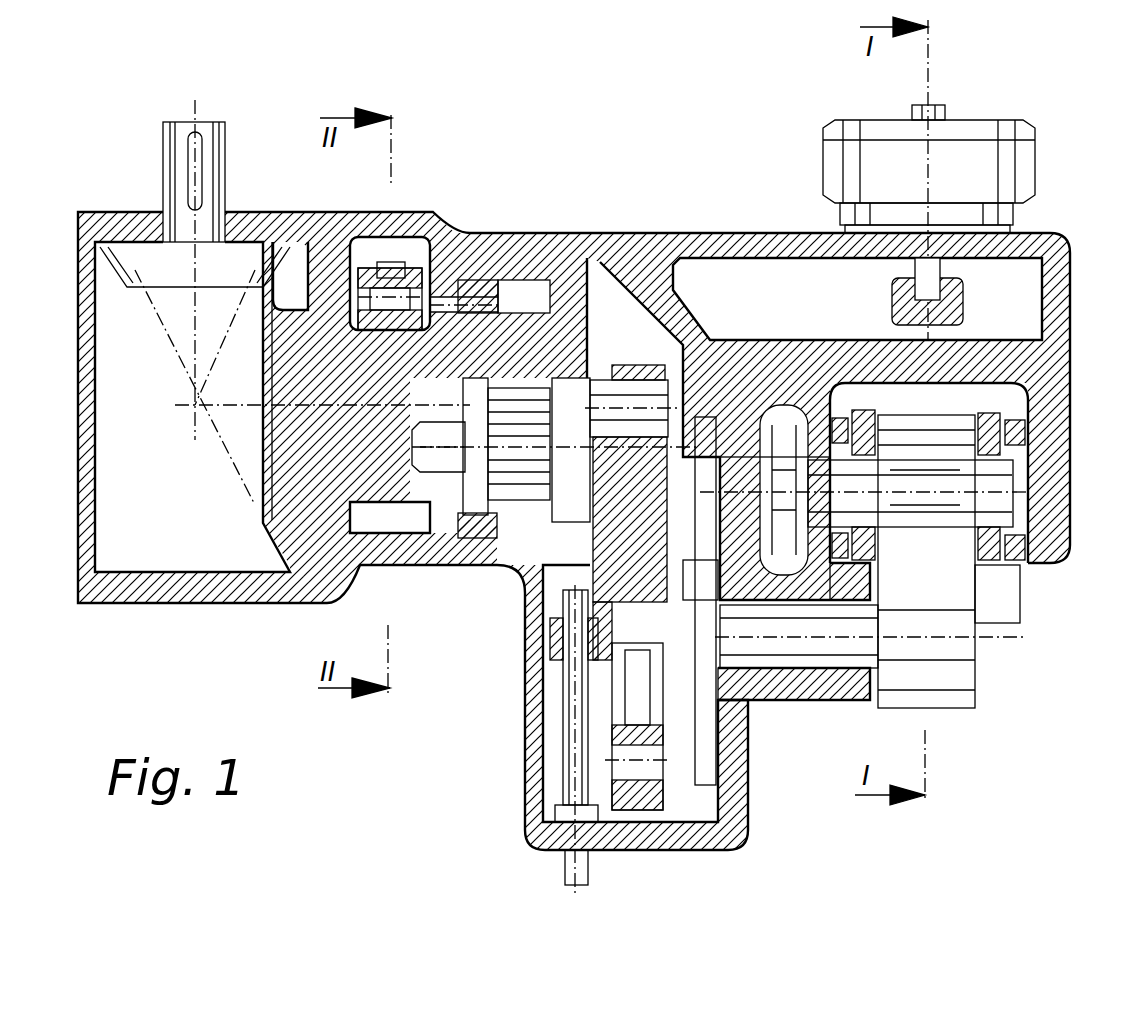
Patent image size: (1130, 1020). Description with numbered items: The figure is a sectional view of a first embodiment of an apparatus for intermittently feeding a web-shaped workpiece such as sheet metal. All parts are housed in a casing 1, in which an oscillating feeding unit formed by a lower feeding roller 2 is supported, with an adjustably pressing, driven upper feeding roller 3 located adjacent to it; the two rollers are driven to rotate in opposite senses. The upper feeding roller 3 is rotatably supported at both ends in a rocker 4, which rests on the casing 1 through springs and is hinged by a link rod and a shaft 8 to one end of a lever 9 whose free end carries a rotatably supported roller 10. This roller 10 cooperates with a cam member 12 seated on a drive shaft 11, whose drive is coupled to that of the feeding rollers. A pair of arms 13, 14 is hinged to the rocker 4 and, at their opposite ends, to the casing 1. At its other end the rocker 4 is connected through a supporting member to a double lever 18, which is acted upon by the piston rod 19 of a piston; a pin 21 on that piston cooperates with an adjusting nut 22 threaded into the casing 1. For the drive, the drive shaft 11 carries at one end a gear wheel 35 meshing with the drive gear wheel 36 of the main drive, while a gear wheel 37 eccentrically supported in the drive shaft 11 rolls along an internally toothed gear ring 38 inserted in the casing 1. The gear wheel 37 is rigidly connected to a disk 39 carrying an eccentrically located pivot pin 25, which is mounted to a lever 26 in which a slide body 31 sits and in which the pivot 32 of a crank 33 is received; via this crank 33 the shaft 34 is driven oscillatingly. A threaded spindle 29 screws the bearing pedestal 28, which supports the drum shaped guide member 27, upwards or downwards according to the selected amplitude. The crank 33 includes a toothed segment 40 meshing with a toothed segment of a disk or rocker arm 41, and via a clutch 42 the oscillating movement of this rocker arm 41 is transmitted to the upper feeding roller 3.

The casing 1 is at (805, 683).
The lower feeding roller 2 is at (958, 683).
The upper feeding roller 3 is at (943, 515).
The rocker 4 is at (1025, 400).
The shaft 8 is at (447, 300).
The lever 9 is at (413, 273).
The roller 10 is at (397, 258).
The drive shaft 11 is at (333, 422).
The cam member 12 is at (478, 287).
The arm 13 is at (1032, 423).
The arm 14 is at (842, 413).
The double lever 18 is at (950, 318).
The piston rod 19 is at (1017, 250).
The pin 21 is at (945, 108).
The adjusting nut 22 is at (1013, 165).
The pivot pin 25 is at (628, 390).
The lever 26 is at (555, 520).
The drum shaped guide member 27 is at (590, 560).
The bearing pedestal 28 is at (560, 632).
The threaded spindle 29 is at (572, 757).
The slide body 31 is at (663, 798).
The pivot 32 is at (672, 773).
The crank 33 is at (708, 715).
The shaft 34 is at (848, 650).
The gear wheel 35 is at (293, 283).
The drive gear wheel 36 is at (228, 257).
The gear wheel 37 is at (417, 507).
The gear ring 38 is at (507, 277).
The disk 39 is at (540, 495).
The toothed segment 40 is at (730, 648).
The rocker arm 41 is at (707, 443).
The clutch 42 is at (780, 460).